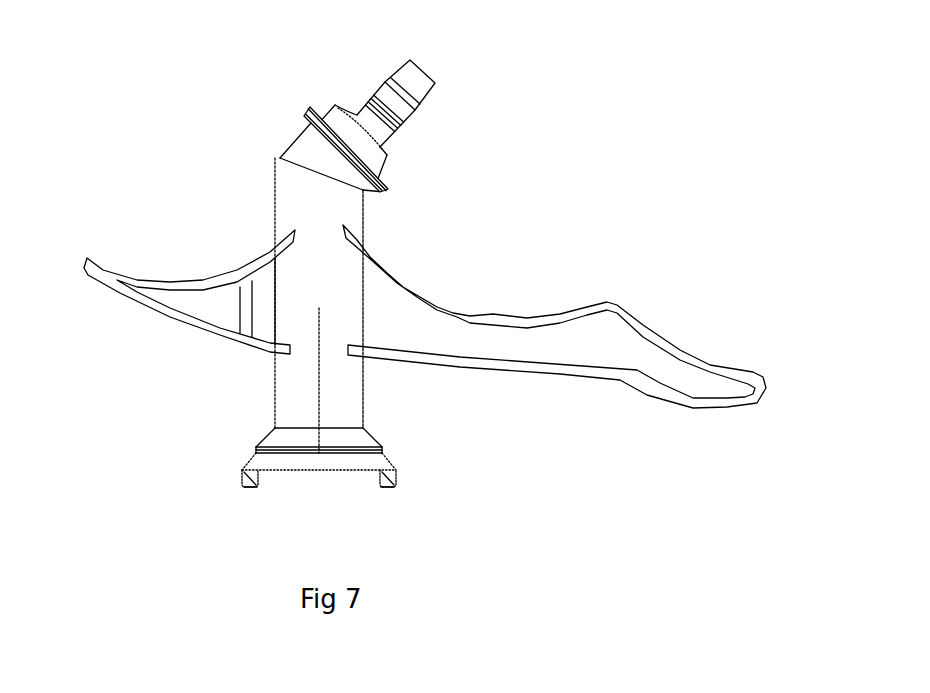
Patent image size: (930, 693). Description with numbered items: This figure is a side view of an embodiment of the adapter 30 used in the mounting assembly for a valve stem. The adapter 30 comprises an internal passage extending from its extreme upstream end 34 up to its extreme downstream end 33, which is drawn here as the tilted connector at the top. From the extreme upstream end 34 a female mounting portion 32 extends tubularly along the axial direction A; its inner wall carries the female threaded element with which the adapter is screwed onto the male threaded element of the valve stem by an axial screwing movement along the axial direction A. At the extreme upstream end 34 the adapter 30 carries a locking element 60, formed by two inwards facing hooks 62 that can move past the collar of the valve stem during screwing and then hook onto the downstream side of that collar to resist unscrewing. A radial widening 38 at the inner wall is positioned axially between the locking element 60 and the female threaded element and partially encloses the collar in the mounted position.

The adapter 30 is at (462, 228).
The female mounting portion 32 is at (205, 422).
The extreme downstream end 33 is at (433, 64).
The extreme upstream end 34 is at (318, 504).
The radial widening 38 is at (255, 452).
The locking element 60 is at (229, 482).
The inwards facing hooks 62 is at (257, 489).
The axial direction A is at (322, 373).